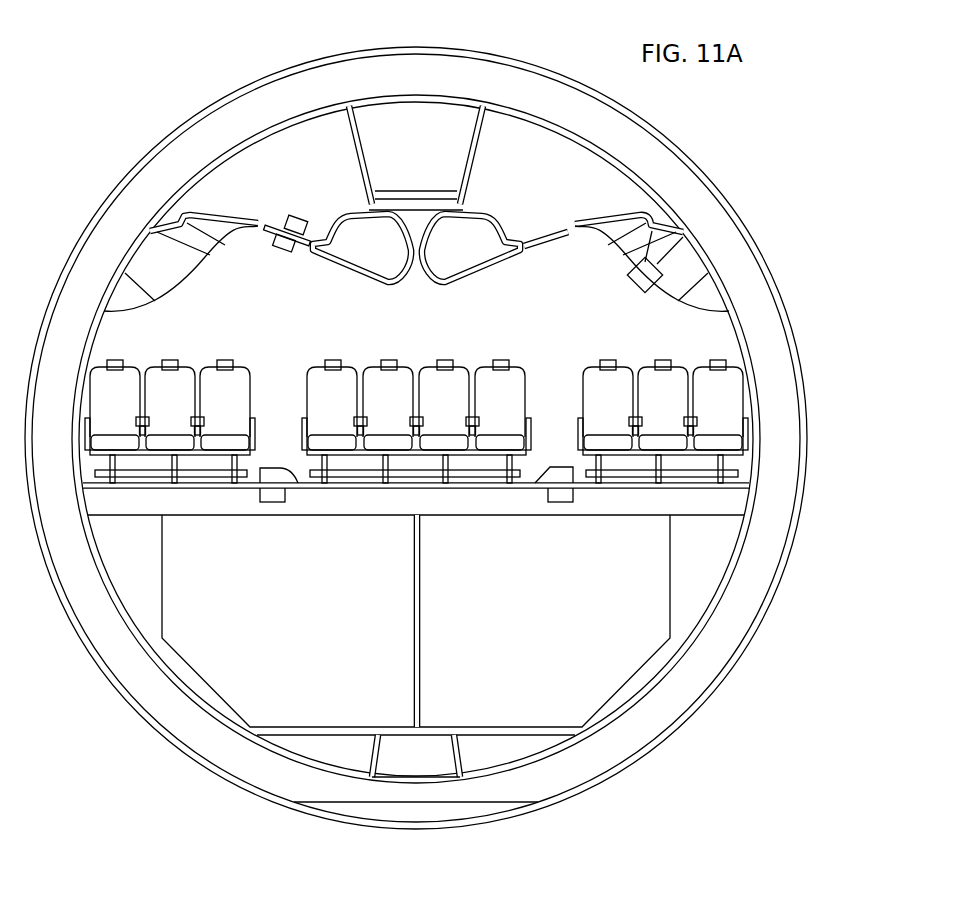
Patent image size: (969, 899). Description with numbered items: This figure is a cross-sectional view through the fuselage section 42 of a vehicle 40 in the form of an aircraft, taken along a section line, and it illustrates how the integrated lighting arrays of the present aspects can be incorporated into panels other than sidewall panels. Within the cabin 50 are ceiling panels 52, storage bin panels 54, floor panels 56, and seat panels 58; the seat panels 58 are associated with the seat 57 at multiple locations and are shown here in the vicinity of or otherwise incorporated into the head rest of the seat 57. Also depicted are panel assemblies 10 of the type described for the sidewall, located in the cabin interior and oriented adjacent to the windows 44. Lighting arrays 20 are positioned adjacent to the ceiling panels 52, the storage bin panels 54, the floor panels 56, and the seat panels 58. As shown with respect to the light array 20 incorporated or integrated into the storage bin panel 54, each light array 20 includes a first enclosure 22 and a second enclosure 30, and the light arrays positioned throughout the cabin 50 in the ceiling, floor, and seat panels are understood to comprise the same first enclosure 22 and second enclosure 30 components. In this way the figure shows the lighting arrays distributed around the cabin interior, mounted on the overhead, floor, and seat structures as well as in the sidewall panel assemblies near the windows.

The panel assembly 10 is at (97, 333).
The lighting array 20 is at (296, 212).
The first enclosure 22 is at (266, 226).
The second enclosure 30 is at (286, 254).
The vehicle 40 is at (122, 97).
The fuselage section 42 is at (230, 95).
The window 44 is at (799, 353).
The cabin 50 is at (258, 290).
The ceiling panel 52 is at (264, 226).
The storage bin panel 54 is at (650, 228).
The floor panel 56 is at (300, 486).
The seat 57 is at (245, 400).
The seat panel 58 is at (240, 369).